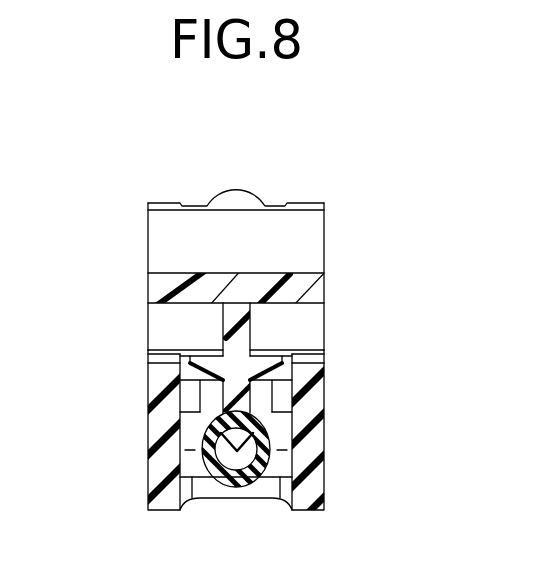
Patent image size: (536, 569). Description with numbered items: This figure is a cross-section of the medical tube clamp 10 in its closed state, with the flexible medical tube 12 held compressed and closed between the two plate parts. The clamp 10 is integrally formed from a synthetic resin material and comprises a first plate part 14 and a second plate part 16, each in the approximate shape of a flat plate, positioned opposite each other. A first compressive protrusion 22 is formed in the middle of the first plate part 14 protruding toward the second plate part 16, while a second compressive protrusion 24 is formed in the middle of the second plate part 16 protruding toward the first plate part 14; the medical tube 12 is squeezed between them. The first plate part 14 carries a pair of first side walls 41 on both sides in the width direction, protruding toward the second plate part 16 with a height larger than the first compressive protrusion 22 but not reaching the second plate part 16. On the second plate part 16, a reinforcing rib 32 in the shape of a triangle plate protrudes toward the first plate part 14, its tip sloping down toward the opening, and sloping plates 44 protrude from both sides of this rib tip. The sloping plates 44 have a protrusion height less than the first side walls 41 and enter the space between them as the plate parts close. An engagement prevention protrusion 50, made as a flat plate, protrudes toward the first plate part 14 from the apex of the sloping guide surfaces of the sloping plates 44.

The medical tube clamp 10 is at (325, 163).
The second plate part 16 is at (299, 287).
The reinforcing rib 32 is at (237, 332).
The sloping plates 44 is at (212, 370).
The engagement prevention protrusion 50 is at (237, 400).
The first side walls 41 is at (168, 437).
The second compressive protrusion 24 is at (283, 378).
The first compressive protrusion 22 is at (283, 403).
The first plate part 14 is at (215, 492).
The medical tube 12 is at (248, 477).